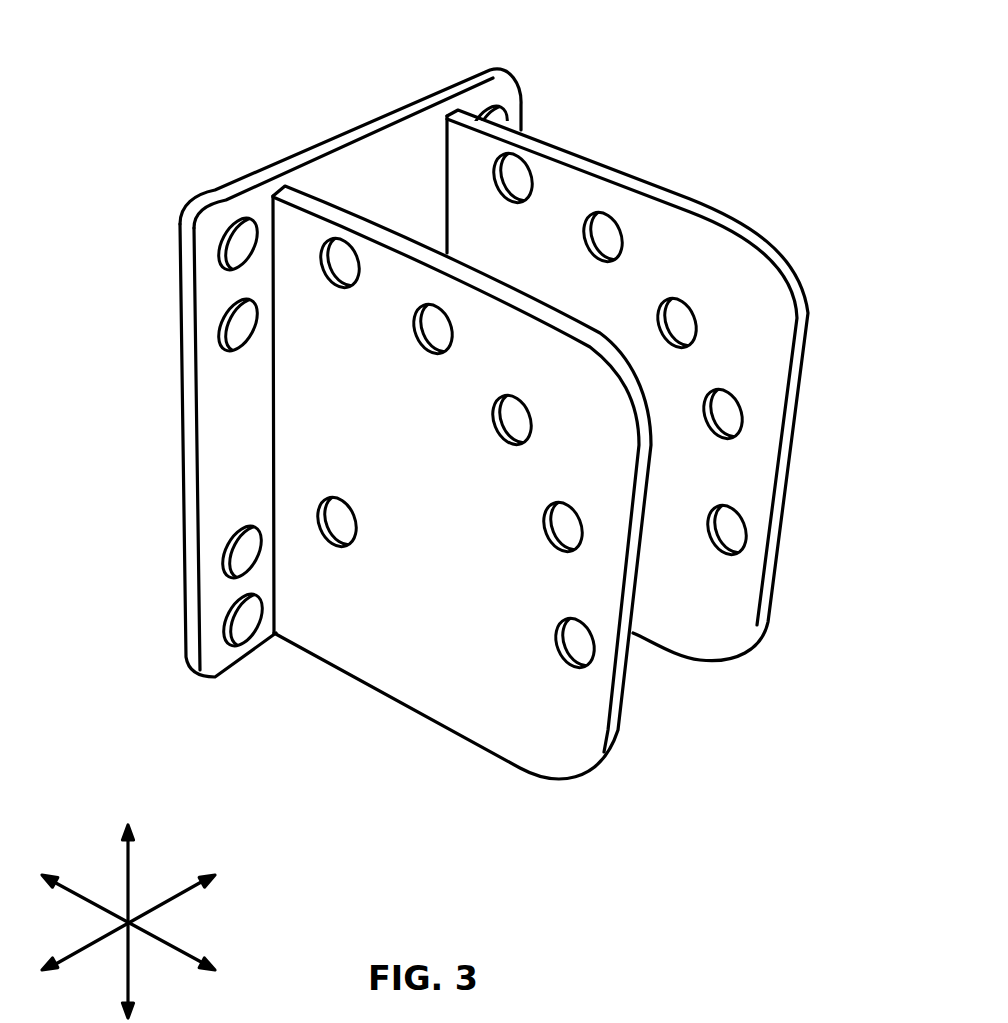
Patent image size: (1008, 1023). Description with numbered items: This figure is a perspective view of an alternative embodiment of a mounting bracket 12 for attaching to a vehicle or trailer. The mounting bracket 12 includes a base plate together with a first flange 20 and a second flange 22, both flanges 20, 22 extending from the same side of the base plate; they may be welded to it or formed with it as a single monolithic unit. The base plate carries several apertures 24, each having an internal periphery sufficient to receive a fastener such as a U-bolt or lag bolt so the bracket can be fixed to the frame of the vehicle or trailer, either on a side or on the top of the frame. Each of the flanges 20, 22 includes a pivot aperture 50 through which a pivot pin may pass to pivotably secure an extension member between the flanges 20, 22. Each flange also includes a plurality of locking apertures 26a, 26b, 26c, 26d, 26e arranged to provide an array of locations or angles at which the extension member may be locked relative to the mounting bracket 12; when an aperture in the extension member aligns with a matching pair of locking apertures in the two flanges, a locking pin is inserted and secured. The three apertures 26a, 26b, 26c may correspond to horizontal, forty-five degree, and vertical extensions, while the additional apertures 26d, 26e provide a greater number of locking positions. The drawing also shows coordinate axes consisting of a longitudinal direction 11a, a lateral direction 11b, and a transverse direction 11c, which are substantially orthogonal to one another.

The mounting bracket 12 is at (411, 782).
The first flange 20 is at (537, 765).
The second flange 22 is at (732, 642).
The apertures 24 is at (489, 105).
The locking aperture 26a is at (363, 270).
The locking aperture 26b is at (532, 425).
The locking aperture 26c is at (587, 647).
The locking aperture 26d is at (452, 324).
The locking aperture 26e is at (587, 532).
The pivot aperture 50 is at (338, 540).
The longitudinal direction 11a is at (180, 956).
The lateral direction 11b is at (187, 892).
The transverse direction 11c is at (130, 887).